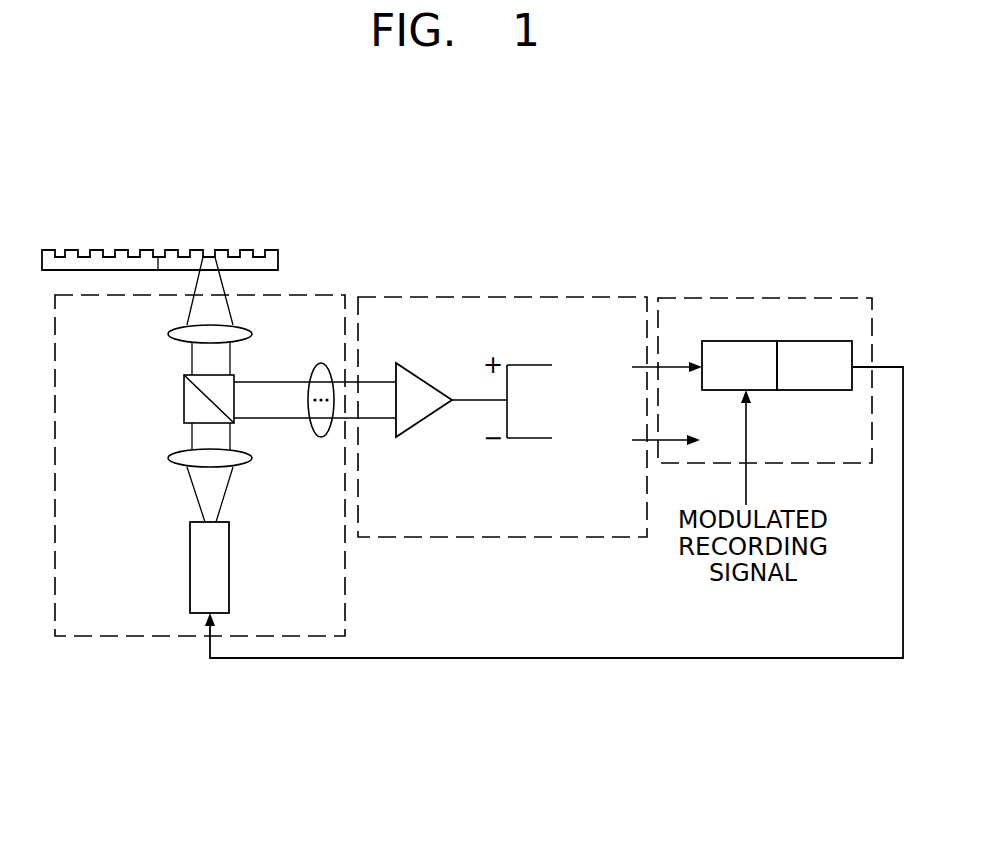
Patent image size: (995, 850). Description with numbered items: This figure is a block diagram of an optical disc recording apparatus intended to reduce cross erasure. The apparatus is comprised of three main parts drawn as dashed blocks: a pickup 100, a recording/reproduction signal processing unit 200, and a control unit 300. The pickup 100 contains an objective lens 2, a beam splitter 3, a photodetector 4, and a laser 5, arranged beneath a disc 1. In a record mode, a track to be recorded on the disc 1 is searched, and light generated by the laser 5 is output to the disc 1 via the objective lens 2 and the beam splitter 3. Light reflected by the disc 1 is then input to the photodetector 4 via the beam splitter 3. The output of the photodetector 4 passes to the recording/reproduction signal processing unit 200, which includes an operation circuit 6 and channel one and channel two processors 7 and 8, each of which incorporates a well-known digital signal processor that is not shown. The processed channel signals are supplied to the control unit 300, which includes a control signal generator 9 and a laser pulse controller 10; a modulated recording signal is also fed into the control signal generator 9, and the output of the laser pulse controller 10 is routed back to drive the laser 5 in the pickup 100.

The disc 1 is at (97, 250).
The objective lens 2 is at (165, 336).
The beam splitter 3 is at (234, 375).
The photodetector 4 is at (320, 437).
The laser 5 is at (190, 562).
The operation circuit 6 is at (416, 370).
The channel 1 processor 7 is at (630, 351).
The channel 2 processor 8 is at (629, 455).
The control signal generator 9 is at (739, 365).
The laser pulse controller 10 is at (814, 365).
The pickup 100 is at (335, 295).
The recording/reproduction signal processing unit 200 is at (527, 297).
The control unit 300 is at (760, 298).